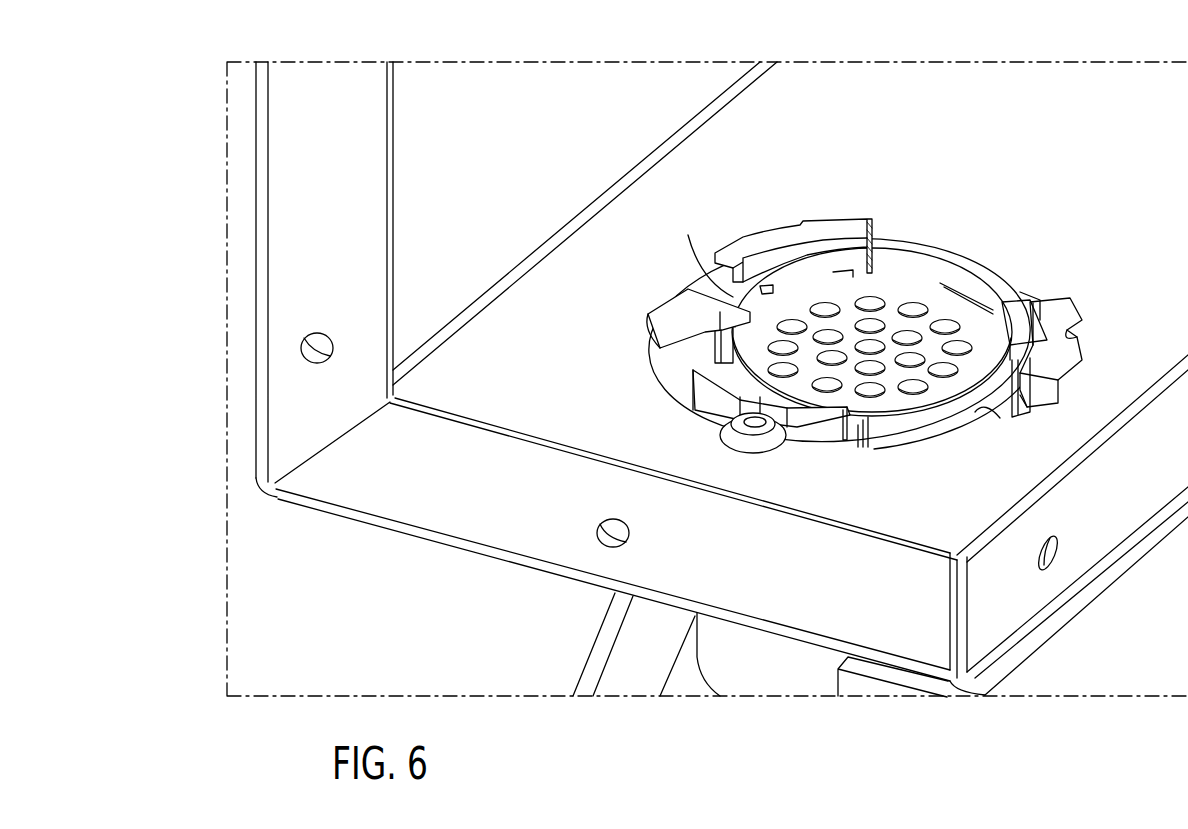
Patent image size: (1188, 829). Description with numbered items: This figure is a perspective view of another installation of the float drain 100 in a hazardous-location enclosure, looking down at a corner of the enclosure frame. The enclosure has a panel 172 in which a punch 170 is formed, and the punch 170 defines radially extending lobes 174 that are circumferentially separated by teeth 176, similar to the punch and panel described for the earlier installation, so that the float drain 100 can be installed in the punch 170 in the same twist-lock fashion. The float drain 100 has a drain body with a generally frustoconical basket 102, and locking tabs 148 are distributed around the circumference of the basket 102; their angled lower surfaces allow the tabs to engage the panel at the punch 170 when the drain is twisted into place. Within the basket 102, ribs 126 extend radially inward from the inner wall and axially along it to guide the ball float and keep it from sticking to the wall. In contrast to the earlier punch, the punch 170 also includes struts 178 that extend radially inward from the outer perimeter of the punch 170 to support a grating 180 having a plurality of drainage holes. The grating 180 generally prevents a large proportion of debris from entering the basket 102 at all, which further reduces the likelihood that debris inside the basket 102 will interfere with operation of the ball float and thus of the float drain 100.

The float drain 100 is at (831, 153).
The basket 102 is at (770, 668).
The ribs 126 is at (720, 323).
The locking tabs 148 is at (847, 227).
The punch 170 is at (930, 462).
The panel 172 is at (735, 143).
The lobes 174 is at (959, 271).
The teeth 176 is at (1020, 293).
The struts 178 is at (740, 295).
The grating 180 is at (893, 295).